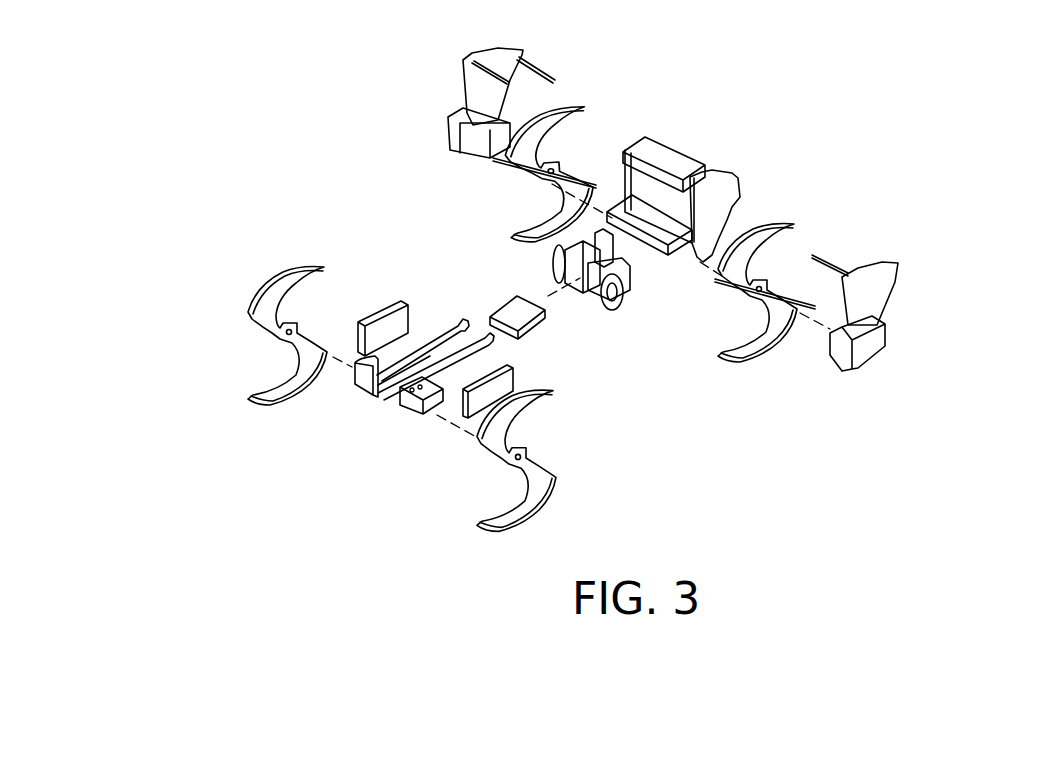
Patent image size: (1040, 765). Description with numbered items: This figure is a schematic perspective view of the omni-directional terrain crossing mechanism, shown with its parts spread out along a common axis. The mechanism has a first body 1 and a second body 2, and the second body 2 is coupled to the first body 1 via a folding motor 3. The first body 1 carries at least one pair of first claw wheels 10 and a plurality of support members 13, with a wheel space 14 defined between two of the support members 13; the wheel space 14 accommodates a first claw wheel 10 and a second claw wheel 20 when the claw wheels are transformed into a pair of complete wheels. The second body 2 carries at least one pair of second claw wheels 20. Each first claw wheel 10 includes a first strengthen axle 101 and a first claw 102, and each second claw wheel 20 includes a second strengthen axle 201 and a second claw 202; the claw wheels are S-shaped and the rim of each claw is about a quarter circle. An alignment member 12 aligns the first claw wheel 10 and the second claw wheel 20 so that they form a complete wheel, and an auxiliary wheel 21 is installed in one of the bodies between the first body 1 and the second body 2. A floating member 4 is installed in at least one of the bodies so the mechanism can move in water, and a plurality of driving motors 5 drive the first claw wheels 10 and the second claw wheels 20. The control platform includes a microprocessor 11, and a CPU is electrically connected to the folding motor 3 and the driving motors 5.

The first body 1 is at (634, 308).
The second body 2 is at (380, 428).
The folding motor 3 is at (600, 297).
The floating member 4 is at (452, 408).
The driving motor 5 is at (407, 400).
The first claw wheel 10 is at (938, 450).
The microprocessor 11 is at (680, 150).
The alignment member 12 is at (740, 352).
The support member 13 is at (715, 203).
The wheel space 14 is at (852, 253).
The second claw wheel 20 is at (287, 172).
The auxiliary wheel 21 is at (575, 224).
The first strengthen axle 101 is at (775, 317).
The first claw 102 is at (762, 352).
The second strengthen axle 201 is at (262, 307).
The second claw 202 is at (317, 264).